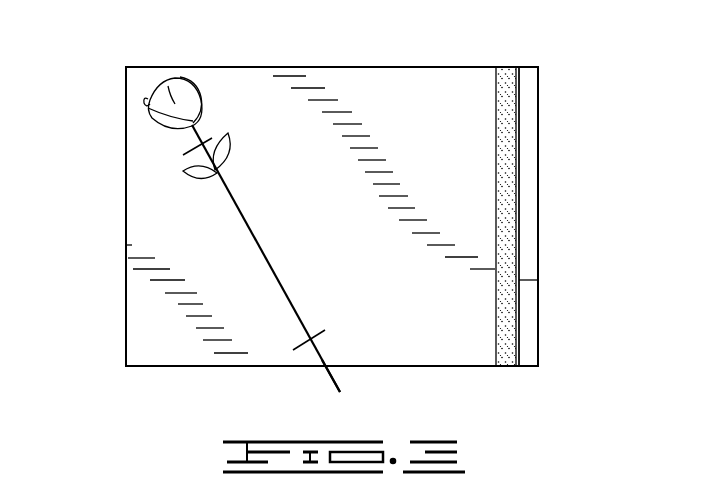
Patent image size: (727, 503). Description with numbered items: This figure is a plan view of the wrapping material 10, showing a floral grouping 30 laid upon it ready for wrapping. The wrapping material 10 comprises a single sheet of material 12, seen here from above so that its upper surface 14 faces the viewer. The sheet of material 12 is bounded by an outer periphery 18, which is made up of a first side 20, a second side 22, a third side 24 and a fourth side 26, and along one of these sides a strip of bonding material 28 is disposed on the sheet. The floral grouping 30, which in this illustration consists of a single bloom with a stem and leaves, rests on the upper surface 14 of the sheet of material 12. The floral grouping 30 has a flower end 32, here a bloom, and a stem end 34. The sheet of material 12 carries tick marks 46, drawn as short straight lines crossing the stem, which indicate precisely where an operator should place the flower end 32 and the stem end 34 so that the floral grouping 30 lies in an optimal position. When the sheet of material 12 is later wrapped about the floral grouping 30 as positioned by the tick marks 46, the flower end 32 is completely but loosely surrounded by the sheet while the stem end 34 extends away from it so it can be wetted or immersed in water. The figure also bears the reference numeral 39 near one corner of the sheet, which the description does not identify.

The wrapping material 10 is at (540, 66).
The sheet of material 12 is at (475, 67).
The upper surface 14 is at (363, 90).
The outer periphery 18 is at (540, 167).
The first side 20 is at (540, 222).
The second side 22 is at (124, 210).
The third side 24 is at (220, 368).
The fourth side 26 is at (273, 67).
The bonding material 28 is at (508, 321).
The floral grouping 30 is at (249, 222).
The flower end 32 is at (148, 107).
The stem end 34 is at (335, 384).
The bottom corner 39 is at (125, 367).
The tick mark 46 is at (213, 135).